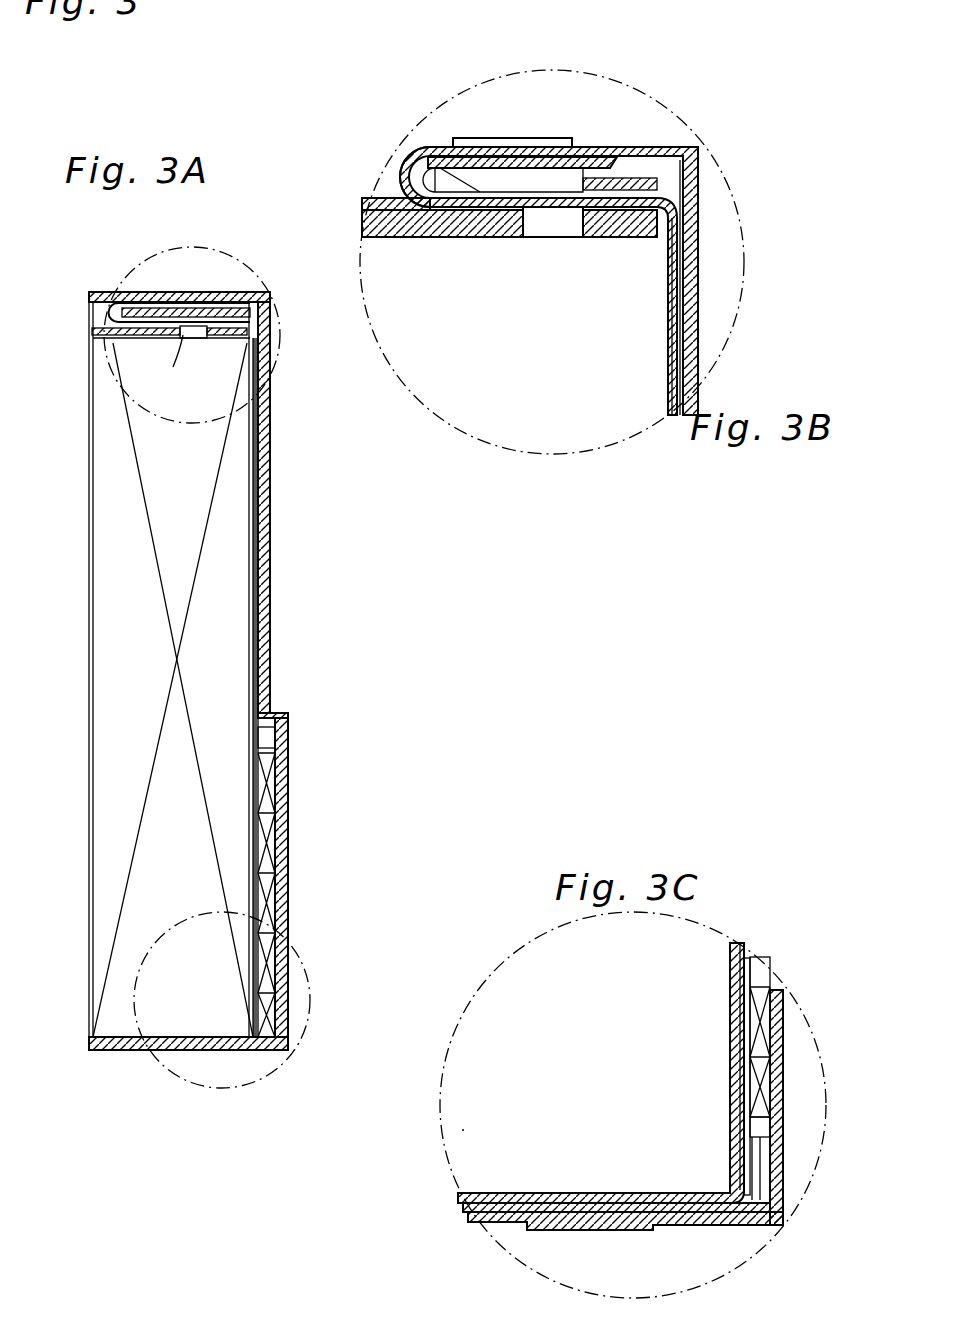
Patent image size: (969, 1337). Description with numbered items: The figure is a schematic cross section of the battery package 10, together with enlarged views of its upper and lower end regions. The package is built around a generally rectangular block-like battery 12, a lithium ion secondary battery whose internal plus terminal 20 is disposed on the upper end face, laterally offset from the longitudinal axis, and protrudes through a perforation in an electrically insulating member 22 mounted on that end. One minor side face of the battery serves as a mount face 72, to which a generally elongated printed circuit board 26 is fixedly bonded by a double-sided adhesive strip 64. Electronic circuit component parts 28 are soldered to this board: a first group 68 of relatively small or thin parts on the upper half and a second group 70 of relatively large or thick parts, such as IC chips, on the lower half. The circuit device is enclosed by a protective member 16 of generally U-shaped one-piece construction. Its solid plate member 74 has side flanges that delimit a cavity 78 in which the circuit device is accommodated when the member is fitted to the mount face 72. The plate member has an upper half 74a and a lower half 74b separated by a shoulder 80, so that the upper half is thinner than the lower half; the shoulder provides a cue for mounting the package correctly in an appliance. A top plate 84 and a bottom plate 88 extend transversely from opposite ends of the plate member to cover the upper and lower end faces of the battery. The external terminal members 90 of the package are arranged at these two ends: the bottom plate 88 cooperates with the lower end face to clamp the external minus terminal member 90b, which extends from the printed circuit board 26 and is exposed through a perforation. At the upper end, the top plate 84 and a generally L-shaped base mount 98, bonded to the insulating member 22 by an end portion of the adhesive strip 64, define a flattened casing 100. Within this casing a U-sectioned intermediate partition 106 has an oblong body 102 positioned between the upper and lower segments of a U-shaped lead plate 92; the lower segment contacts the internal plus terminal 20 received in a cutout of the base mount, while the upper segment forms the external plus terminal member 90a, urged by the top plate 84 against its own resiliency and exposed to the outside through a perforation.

In FIG. 3A, the battery package 10 is at (335, 717).
In FIG. 3A, the battery 12 is at (232, 533).
In FIG. 3C, the battery 12 is at (462, 1130).
In FIG. 3A, the protective member 16 is at (270, 677).
In FIG. 3B, the internal plus terminal 20 is at (573, 238).
In FIG. 3B, the electrically insulating member 22 is at (452, 238).
In FIG. 3A, the printed circuit board 26 is at (268, 625).
In FIG. 3C, the printed circuit board 26 is at (752, 962).
In FIG. 3C, the electronic circuit component parts 28 is at (771, 1010).
In FIG. 3B, the double-sided adhesive strip 64 is at (667, 368).
In FIG. 3C, the double-sided adhesive strip 64 is at (730, 982).
In FIG. 3A, the first group of electronic circuit component parts 68 is at (267, 470).
In FIG. 3A, the second group of electronic circuit component parts 70 is at (288, 870).
In FIG. 3B, the mount face 72 is at (669, 325).
In FIG. 3A, the plate member 74 is at (268, 652).
In FIG. 3A, the upper half of the plate member 74a is at (267, 430).
In FIG. 3A, the lower half of the plate member 74b is at (288, 833).
In FIG. 3A, the cavity 78 is at (268, 745).
In FIG. 3A, the shoulder 80 is at (270, 713).
In FIG. 3A, the top plate 84 is at (112, 302).
In FIG. 3B, the top plate 84 is at (428, 148).
In FIG. 3C, the bottom plate 88 is at (487, 1225).
In FIG. 3C, the sealing plate 90 is at (622, 1222).
In FIG. 3A, the external plus terminal member 90a is at (172, 312).
In FIG. 3B, the external plus terminal member 90a is at (530, 170).
In FIG. 3C, the external minus terminal member 90b is at (587, 1210).
In FIG. 3B, the lead plate 92 is at (700, 204).
In FIG. 3B, the base mount 98 is at (362, 205).
In FIG. 3B, the casing 100 is at (392, 188).
In FIG. 3B, the oblong body 102 is at (525, 175).
In FIG. 3B, the intermediate partition 106 is at (517, 205).